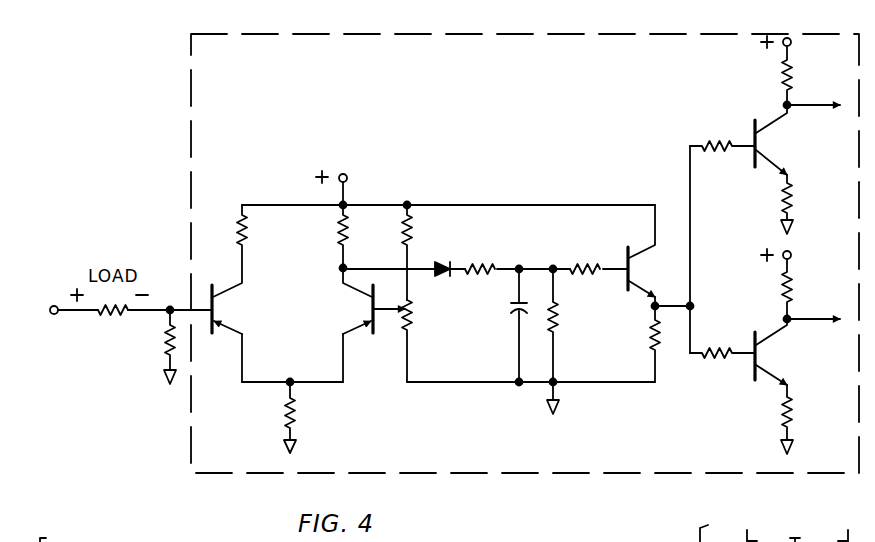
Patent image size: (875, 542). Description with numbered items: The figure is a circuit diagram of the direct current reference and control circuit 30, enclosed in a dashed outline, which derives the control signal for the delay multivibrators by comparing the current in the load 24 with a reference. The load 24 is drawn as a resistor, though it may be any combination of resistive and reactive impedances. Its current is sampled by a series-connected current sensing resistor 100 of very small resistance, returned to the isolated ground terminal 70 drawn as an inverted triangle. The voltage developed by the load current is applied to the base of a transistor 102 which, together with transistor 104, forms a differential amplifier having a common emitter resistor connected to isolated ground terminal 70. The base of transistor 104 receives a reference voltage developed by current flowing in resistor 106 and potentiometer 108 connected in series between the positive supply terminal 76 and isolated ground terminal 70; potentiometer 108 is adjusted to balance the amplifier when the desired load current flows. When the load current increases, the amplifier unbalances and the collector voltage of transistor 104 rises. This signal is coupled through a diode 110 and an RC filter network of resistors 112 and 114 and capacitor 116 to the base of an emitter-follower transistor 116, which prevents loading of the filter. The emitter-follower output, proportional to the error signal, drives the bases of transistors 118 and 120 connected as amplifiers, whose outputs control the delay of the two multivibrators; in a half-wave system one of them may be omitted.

The reference and control circuit 30 is at (191, 190).
The load 24 is at (105, 316).
The current sensing resistor 100 is at (160, 345).
The isolated ground terminal 70 is at (164, 376).
The transistor 102 is at (221, 306).
The transistor 104 is at (365, 307).
The output terminal 76 is at (346, 181).
The resistor 106 is at (413, 240).
The potentiometer 108 is at (413, 330).
The diode 110 is at (441, 260).
The resistor 112 is at (494, 262).
The capacitor / emitter-follower transistor 116 is at (512, 309).
The resistor 114 is at (558, 310).
The transistor 118 is at (750, 133).
The transistor 120 is at (750, 362).